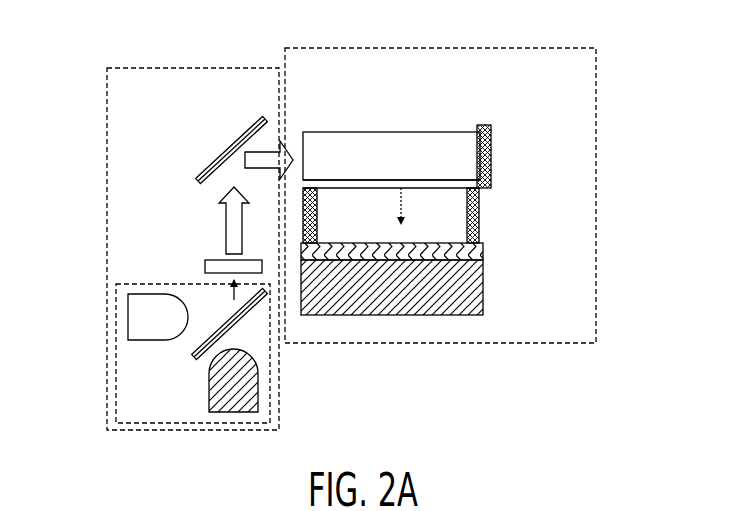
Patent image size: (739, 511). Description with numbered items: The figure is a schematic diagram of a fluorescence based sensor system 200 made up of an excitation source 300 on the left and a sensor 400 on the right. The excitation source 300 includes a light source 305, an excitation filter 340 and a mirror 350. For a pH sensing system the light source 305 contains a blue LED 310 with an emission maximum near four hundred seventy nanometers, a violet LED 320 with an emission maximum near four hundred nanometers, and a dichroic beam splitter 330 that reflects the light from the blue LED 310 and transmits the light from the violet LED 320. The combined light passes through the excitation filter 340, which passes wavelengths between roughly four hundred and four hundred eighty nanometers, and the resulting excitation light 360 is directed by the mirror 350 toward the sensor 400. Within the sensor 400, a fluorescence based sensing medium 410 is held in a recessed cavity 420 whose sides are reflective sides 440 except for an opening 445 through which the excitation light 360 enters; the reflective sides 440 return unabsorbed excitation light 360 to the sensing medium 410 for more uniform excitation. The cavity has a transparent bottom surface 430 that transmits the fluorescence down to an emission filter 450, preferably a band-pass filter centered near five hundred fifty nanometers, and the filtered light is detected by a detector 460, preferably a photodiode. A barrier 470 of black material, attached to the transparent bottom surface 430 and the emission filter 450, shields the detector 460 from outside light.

The fluorescence based sensor system 200 is at (375, 32).
The excitation source 300 is at (107, 78).
The light source 305 is at (116, 370).
The blue LED 310 is at (128, 318).
The violet LED 320 is at (258, 382).
The dichroic beam splitter 330 is at (200, 348).
The excitation filter 340 is at (205, 268).
The mirror 350 is at (215, 158).
The excitation light 360 is at (270, 117).
The sensor 400 is at (598, 78).
The fluorescence based sensing medium 410 is at (375, 130).
The recessed cavity 420 is at (447, 150).
The transparent bottom surface 430 is at (425, 178).
The reflective sides 440 is at (491, 150).
The opening 445 is at (295, 136).
The emission filter 450 is at (483, 248).
The detector 460 is at (483, 298).
The barrier 470 is at (317, 210).